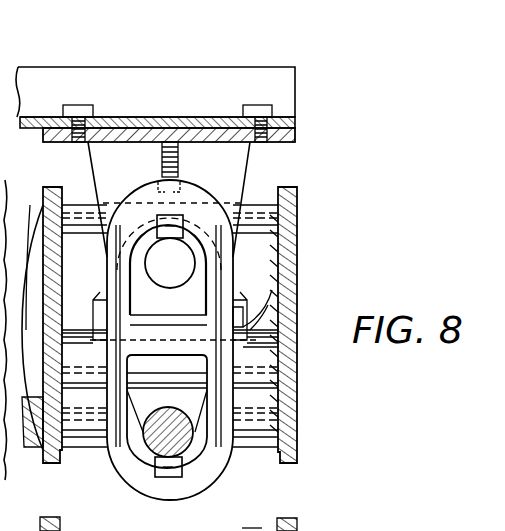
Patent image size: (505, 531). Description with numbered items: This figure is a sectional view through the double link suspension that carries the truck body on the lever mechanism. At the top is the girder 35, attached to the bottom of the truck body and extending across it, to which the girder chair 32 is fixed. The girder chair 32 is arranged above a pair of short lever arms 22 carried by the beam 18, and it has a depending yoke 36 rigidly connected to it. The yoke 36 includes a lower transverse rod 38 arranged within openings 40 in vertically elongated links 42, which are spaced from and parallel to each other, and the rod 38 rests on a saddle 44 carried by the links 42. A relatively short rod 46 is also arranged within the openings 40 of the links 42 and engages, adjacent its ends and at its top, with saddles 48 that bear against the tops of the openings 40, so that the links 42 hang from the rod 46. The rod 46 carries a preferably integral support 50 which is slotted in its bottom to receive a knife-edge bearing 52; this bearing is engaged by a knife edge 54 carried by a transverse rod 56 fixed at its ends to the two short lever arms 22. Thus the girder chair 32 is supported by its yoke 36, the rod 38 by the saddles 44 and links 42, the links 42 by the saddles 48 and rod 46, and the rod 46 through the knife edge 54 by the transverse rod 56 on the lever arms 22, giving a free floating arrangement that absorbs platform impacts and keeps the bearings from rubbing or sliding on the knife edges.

The beam 18 is at (253, 430).
The lever arm 22 is at (288, 218).
The girder chair 32 is at (298, 130).
The girder 35 is at (280, 82).
The yoke 36 is at (242, 177).
The lower transverse rod 38 is at (197, 447).
The opening 40 is at (200, 287).
The link 42 is at (203, 193).
The saddle 44 is at (165, 477).
The short rod 46 is at (182, 275).
The saddle 48 is at (160, 215).
The support 50 is at (278, 280).
The knife-edge bearing 52 is at (292, 290).
The knife edge 54 is at (295, 310).
The transverse rod 56 is at (265, 360).